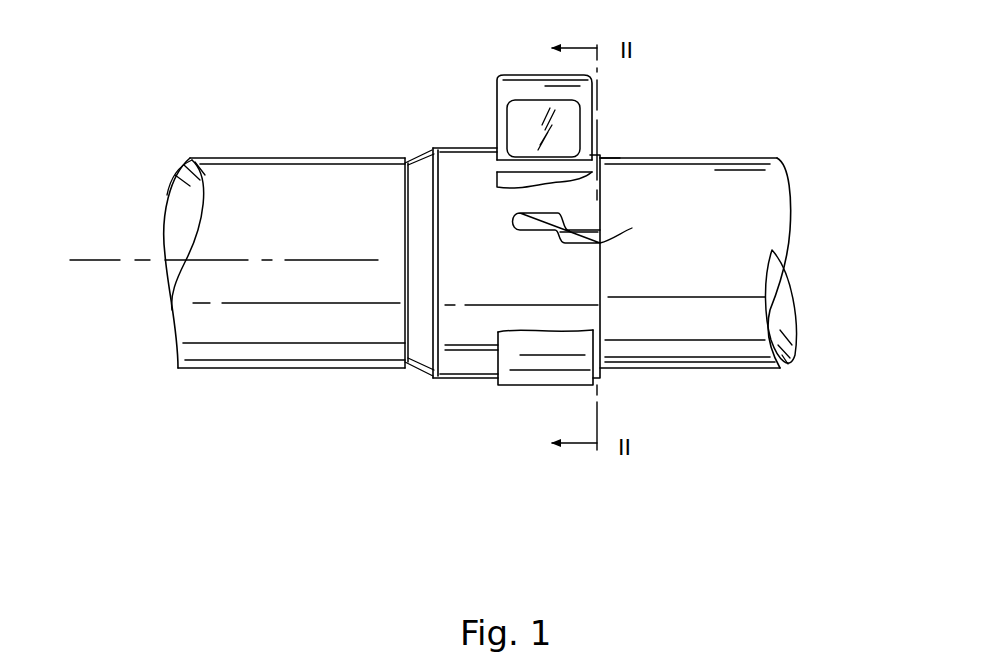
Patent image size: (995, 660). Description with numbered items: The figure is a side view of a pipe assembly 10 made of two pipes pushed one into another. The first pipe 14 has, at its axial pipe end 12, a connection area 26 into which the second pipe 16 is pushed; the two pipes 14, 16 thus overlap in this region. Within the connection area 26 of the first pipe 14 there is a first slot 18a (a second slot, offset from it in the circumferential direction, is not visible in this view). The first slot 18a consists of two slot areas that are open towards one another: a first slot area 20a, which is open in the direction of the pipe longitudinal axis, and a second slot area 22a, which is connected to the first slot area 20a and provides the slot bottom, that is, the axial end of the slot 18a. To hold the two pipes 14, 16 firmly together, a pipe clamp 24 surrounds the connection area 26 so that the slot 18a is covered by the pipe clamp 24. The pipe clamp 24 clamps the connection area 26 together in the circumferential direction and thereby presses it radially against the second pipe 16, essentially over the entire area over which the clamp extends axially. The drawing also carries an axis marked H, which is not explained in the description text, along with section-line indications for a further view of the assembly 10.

The pipe assembly 10 is at (637, 147).
The axial pipe end 12 is at (605, 375).
The first pipe 14 is at (330, 158).
The second pipe 16 is at (757, 158).
The first slot 18a is at (540, 246).
The first slot area 20a is at (652, 230).
The second slot area 22a is at (528, 222).
The pipe clamp 24 is at (485, 103).
The connection area 26 is at (458, 415).
The longitudinal axis H is at (108, 262).